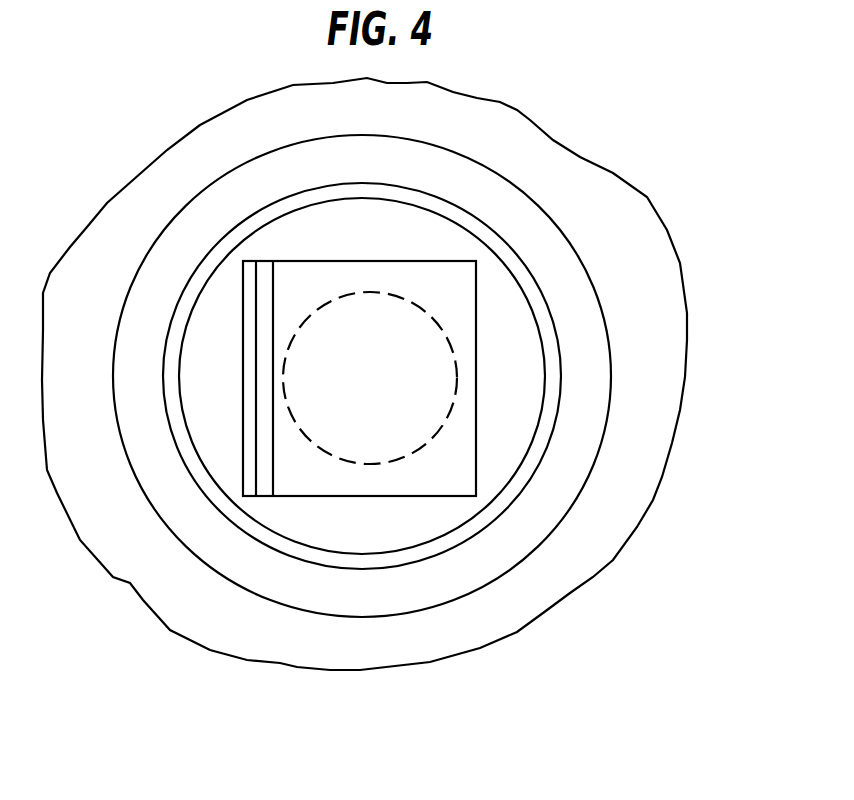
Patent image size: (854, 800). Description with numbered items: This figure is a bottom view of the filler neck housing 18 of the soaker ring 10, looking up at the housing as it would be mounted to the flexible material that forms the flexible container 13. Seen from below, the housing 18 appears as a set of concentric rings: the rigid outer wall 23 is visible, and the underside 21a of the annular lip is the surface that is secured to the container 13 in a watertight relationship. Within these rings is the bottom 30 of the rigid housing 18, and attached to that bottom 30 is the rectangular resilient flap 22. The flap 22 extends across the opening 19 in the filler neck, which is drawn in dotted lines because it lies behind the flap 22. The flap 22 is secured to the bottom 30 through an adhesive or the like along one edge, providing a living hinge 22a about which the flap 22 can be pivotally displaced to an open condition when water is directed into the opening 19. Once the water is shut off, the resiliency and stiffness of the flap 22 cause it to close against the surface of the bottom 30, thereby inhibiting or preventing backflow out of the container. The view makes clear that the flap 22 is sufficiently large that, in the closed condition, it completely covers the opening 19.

The soaker ring 10 is at (668, 285).
The flexible container 13 is at (585, 165).
The filler neck housing 18 is at (140, 616).
The opening 19 is at (386, 388).
The underside of annular lip 21a is at (593, 367).
The resilient flap 22 is at (417, 477).
The living hinge 22a is at (257, 300).
The rigid outer wall 23 is at (550, 327).
The bottom 30 is at (515, 410).